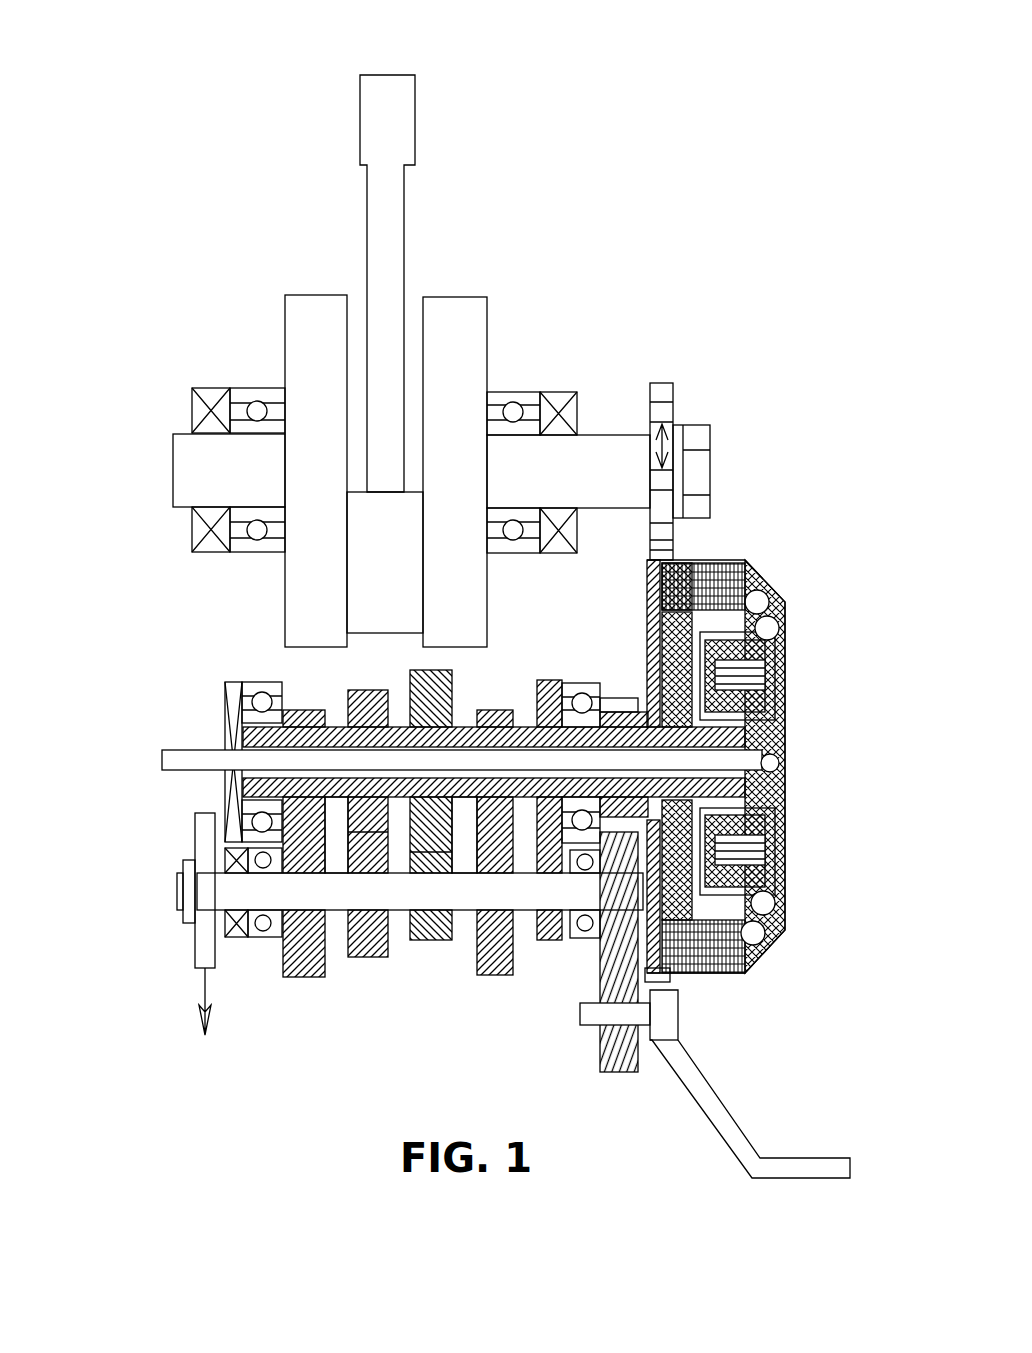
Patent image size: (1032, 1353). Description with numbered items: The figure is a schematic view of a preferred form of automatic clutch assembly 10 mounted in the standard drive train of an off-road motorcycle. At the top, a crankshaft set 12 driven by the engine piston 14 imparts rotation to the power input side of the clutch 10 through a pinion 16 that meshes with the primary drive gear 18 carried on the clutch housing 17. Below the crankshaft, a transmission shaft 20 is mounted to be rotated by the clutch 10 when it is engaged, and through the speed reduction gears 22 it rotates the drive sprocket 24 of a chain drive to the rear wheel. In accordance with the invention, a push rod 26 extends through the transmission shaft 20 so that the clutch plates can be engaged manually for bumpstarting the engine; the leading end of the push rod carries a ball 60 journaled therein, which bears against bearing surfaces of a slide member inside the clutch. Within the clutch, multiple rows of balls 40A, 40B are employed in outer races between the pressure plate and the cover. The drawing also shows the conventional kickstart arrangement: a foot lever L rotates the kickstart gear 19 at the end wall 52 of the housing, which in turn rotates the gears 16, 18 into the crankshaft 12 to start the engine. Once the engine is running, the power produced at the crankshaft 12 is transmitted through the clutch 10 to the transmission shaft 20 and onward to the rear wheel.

The engine piston 14 is at (383, 120).
The crankshaft set 12 is at (455, 330).
The pinion 16 is at (662, 383).
The clutch housing 17 is at (698, 565).
The primary drive gear 18 is at (647, 575).
The kickstart gear 19 is at (618, 697).
The automatic clutch assembly 10 is at (787, 643).
The transmission shaft 20 is at (257, 728).
The push rod 26 is at (175, 757).
The ball 60 is at (780, 757).
The speed reduction gears 22 is at (430, 940).
The drive sprocket 24 is at (205, 958).
The end wall 52 is at (658, 962).
The row of balls 40B is at (772, 907).
The row of balls 40A is at (757, 936).
The foot lever L is at (692, 1070).